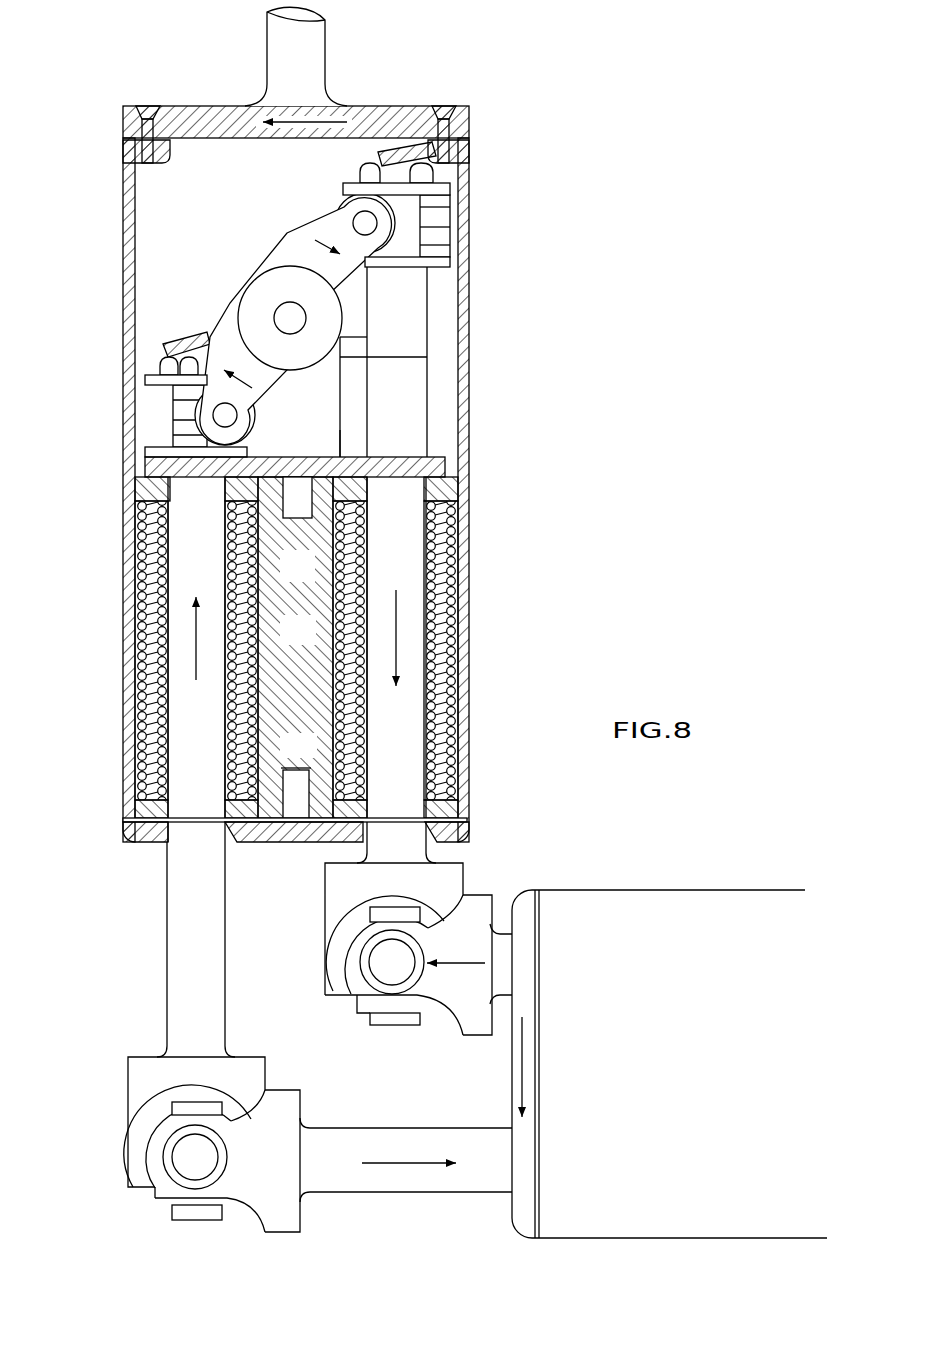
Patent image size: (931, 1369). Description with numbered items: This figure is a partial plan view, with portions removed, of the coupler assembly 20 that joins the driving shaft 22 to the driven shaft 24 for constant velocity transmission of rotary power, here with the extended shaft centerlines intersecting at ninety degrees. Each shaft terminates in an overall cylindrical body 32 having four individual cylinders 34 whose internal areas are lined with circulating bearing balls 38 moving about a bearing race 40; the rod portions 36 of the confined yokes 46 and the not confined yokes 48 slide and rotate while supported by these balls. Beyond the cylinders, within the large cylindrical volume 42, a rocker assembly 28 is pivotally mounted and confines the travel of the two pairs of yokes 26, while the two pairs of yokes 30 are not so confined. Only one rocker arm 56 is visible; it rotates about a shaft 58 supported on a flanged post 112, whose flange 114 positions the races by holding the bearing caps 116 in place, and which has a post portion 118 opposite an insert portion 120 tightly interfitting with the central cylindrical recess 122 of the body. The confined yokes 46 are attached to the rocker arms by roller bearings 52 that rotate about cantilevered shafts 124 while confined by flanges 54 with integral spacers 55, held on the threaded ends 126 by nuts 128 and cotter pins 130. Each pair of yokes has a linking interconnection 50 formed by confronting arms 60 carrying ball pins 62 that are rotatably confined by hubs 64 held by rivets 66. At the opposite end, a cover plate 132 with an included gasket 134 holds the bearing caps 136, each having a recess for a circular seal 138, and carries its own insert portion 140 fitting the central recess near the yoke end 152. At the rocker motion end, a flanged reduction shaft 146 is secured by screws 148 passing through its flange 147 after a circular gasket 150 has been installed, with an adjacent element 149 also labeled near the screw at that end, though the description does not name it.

The coupler assembly 20 is at (127, 1075).
The driving shaft 22 is at (121, 609).
The driven shaft 24 is at (653, 887).
The pairs of yokes or links 26 is at (429, 384).
The rocker assembly 28 is at (228, 305).
The pairs of yokes or links 30 is at (496, 919).
The overall cylindrical body 32 is at (471, 628).
The individual cylinder 34 is at (140, 545).
The rod portion 36 is at (186, 534).
The bearing balls 38 is at (456, 577).
The bearing race 40 is at (462, 527).
The large cylindrical volume 42 is at (445, 328).
The confined yoke or link 46 is at (428, 298).
The not confined yoke or link 48 is at (505, 997).
The linking interconnection 50 is at (363, 1012).
The roller bearing 52 is at (350, 205).
The flange 54 is at (450, 189).
The integral spacer 55 is at (420, 207).
The rocker arm 56 is at (285, 240).
The shaft 58 is at (290, 318).
The arm 60 is at (325, 890).
The ball pin 62 is at (370, 955).
The hub 64 is at (352, 1000).
The rivet 66 is at (394, 1027).
The flanged post 112 is at (343, 414).
The flange 114 is at (446, 462).
The bearing cap 116 is at (462, 490).
The post portion 118 is at (460, 356).
The insert portion 120 is at (299, 520).
The central cylindrical recess 122 is at (283, 642).
The cantilevered shaft 124 is at (353, 222).
The threaded end 126 is at (192, 340).
The nut 128 is at (434, 172).
The cotter pin 130 is at (165, 352).
The cover plate 132 is at (120, 835).
The gasket 134 is at (150, 822).
The bearing cap 136 is at (462, 775).
The circular seal 138 is at (140, 803).
The insert portion 140 is at (300, 769).
The flanged reduction shaft 146 is at (328, 45).
The flange 147 is at (470, 122).
The screw 148 is at (441, 105).
The gasket block 149 is at (130, 150).
The circular gasket 150 is at (123, 140).
The yoke end 152 is at (466, 806).